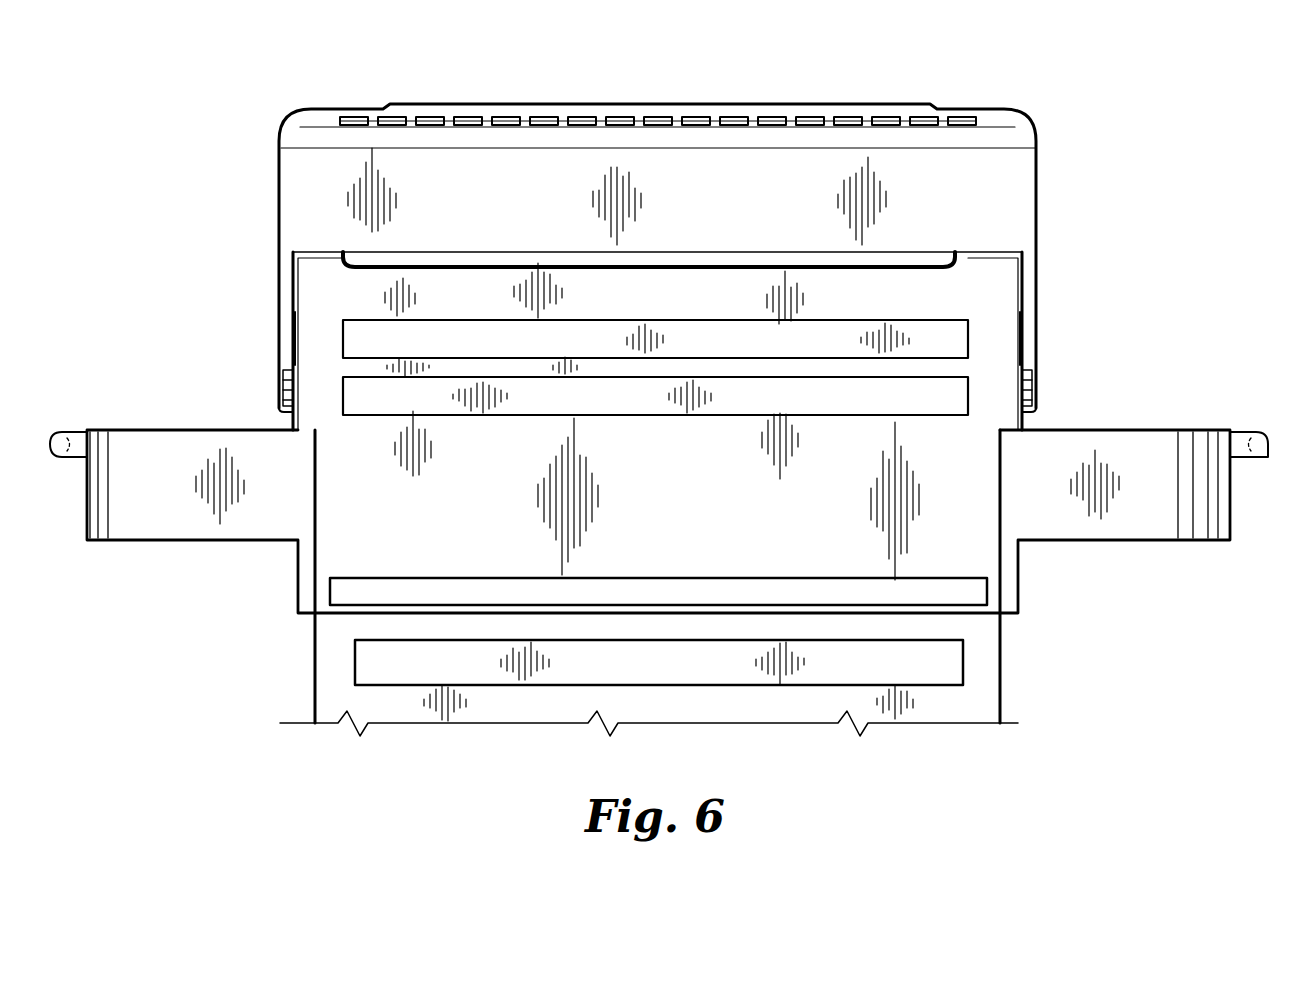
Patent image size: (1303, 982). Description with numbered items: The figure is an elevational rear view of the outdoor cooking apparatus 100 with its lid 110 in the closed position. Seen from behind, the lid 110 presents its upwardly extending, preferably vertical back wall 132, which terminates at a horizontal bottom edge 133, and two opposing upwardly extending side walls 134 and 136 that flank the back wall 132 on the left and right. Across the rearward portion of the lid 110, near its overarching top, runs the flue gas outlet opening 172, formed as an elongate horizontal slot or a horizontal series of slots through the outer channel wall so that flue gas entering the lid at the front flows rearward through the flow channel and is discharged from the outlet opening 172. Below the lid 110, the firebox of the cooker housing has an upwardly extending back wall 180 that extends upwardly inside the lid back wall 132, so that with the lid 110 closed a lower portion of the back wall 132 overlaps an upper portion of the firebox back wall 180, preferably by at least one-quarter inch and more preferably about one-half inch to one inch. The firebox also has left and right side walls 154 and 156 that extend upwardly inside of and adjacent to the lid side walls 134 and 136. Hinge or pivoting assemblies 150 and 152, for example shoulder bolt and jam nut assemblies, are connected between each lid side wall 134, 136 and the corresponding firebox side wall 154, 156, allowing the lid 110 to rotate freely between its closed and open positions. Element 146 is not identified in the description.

The outdoor cooking apparatus 100 is at (262, 128).
The lid 110 is at (333, 122).
The flue gas outlet opening 172 is at (690, 122).
The top cover 146 is at (1015, 138).
The back wall 132 is at (955, 206).
The side wall 134 is at (281, 296).
The side wall 136 is at (1037, 282).
The hinge assembly 150 is at (292, 338).
The hinge assembly 152 is at (1023, 330).
The firebox side wall 154 is at (290, 378).
The firebox side wall 156 is at (1024, 382).
The horizontal bottom edge 133 is at (483, 268).
The firebox back wall 180 is at (527, 342).